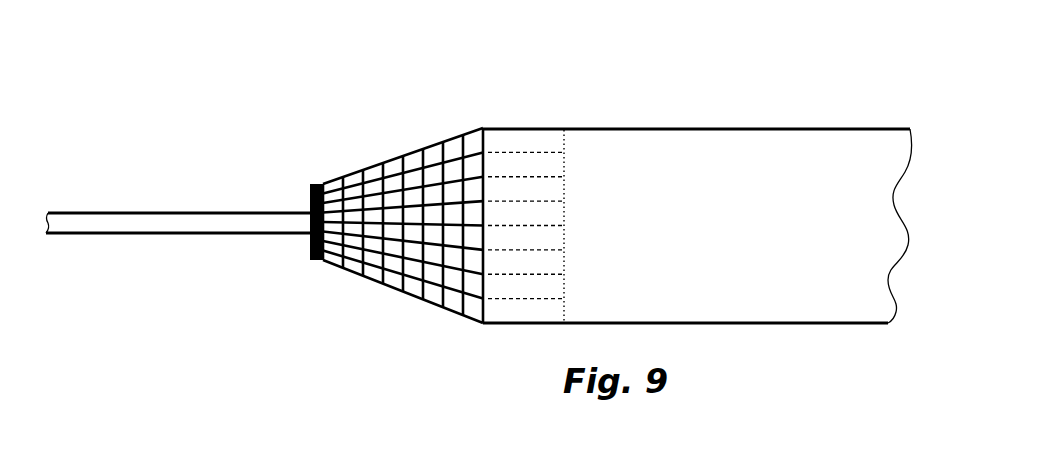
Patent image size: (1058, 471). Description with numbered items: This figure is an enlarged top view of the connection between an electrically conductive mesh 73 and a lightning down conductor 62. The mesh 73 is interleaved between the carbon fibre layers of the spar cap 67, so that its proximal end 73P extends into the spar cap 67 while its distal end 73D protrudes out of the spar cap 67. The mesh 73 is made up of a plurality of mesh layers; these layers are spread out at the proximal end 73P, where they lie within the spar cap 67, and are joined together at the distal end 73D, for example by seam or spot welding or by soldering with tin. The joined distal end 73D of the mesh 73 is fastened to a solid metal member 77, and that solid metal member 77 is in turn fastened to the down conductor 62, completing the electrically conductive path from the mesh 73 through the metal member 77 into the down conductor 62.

The down conductor 62 is at (200, 222).
The solid metal member 77 is at (310, 192).
The electrically conductive mesh 73 is at (442, 204).
The proximal end of the mesh 73P is at (518, 152).
The distal end of the mesh 73D is at (420, 283).
The spar cap 67 is at (723, 143).